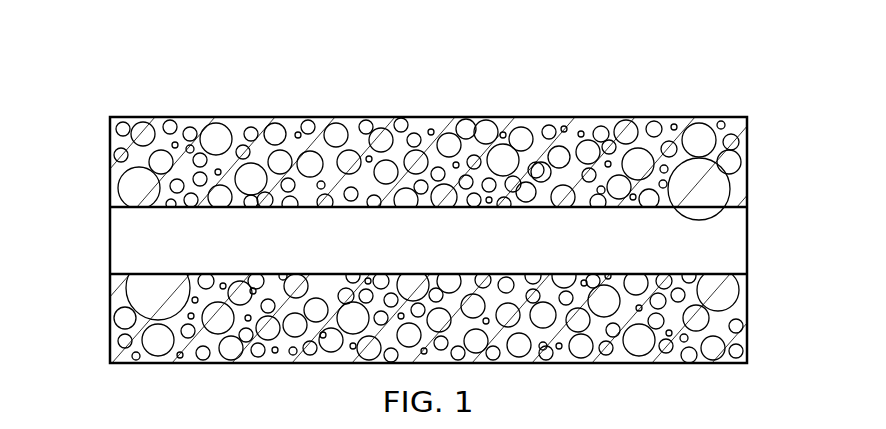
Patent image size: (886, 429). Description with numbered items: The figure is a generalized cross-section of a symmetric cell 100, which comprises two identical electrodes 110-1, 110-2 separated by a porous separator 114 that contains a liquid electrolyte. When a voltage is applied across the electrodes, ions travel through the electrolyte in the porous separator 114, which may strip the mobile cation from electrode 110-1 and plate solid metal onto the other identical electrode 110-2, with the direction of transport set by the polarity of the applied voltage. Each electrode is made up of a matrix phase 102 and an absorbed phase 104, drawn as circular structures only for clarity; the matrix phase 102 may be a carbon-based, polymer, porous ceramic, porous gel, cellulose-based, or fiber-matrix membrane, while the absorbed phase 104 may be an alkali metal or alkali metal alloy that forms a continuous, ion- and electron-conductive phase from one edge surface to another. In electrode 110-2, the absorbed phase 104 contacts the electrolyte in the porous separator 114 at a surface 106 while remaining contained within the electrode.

The symmetric cell 100 is at (566, 83).
The matrix phase 102 is at (241, 123).
The absorbed phase 104 is at (453, 118).
The surface 106 is at (748, 217).
The electrode 110-1 is at (428, 140).
The electrode 110-2 is at (98, 275).
The porous separator 114 is at (446, 255).